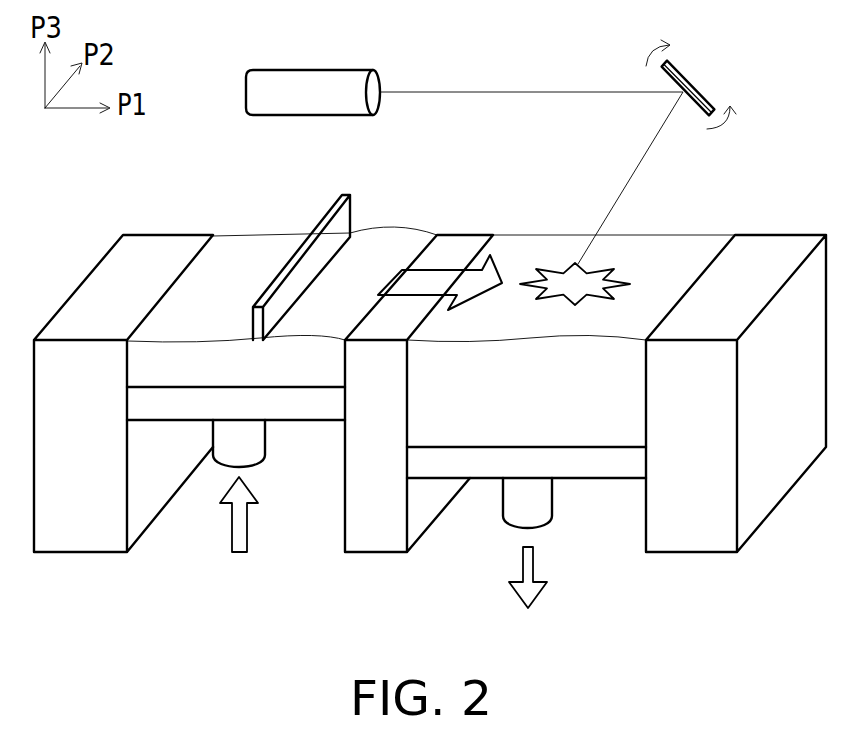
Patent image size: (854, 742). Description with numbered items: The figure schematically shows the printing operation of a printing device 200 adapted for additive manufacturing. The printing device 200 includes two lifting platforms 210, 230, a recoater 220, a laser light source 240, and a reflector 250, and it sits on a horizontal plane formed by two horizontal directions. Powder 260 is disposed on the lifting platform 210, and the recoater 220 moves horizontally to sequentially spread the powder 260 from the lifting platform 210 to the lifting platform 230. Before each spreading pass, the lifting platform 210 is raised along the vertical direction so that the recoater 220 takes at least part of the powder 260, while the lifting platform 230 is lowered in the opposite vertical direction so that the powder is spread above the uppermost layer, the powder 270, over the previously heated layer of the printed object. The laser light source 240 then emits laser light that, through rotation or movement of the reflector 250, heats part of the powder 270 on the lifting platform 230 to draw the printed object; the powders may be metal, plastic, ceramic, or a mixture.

The printing device 200 is at (837, 631).
The lifting platform 210 is at (315, 407).
The recoater 220 is at (339, 183).
The lifting platform 230 is at (604, 465).
The laser light source 240 is at (313, 82).
The reflector 250 is at (688, 73).
The powder 260 is at (261, 242).
The powder 270 is at (650, 230).